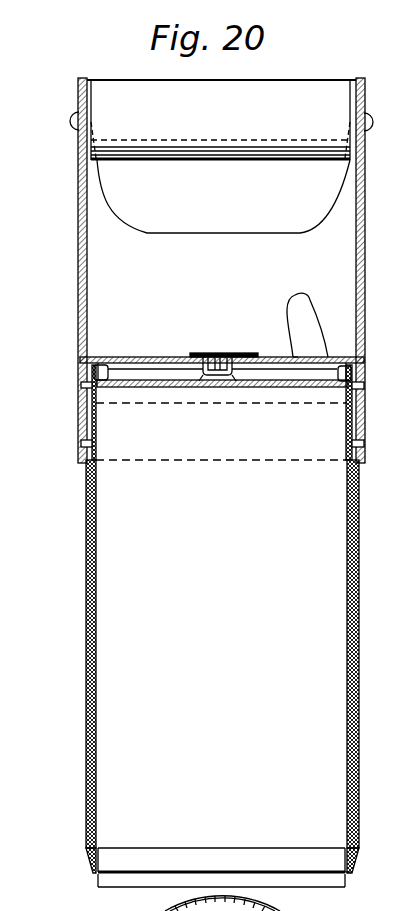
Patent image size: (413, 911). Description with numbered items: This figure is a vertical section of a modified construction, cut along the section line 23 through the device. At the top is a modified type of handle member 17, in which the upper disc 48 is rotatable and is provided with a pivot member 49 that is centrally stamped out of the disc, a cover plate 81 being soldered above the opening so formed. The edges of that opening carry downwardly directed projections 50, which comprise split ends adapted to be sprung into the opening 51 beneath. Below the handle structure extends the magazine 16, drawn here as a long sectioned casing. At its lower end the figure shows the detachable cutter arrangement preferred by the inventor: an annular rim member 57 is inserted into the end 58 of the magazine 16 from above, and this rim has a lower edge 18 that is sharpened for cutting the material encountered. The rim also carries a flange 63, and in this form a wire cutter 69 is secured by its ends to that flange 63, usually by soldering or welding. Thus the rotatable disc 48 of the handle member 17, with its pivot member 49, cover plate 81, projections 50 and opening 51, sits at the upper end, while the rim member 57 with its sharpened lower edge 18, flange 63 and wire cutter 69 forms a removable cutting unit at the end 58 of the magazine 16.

The magazine 16 is at (359, 584).
The handle member 17 is at (364, 200).
The lower edge 18 is at (117, 888).
The section line 23 is at (400, 248).
The upper disc 48 is at (160, 357).
The pivot member 49 is at (200, 375).
The downwardly directed projections 50 is at (262, 388).
The opening 51 is at (233, 381).
The annular rim member 57 is at (347, 887).
The end of the magazine 58 is at (353, 868).
The flange 63 is at (221, 860).
The wire cutter 69 is at (177, 872).
The cover plate 81 is at (217, 355).